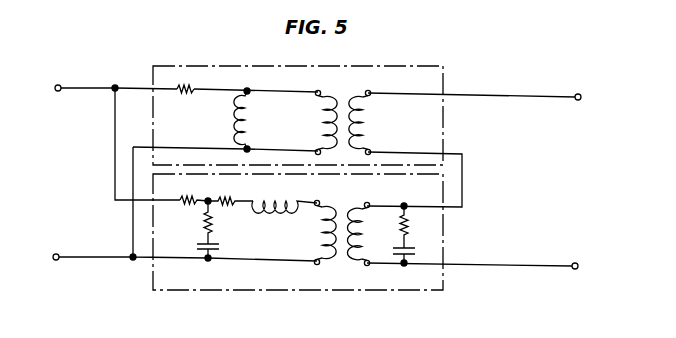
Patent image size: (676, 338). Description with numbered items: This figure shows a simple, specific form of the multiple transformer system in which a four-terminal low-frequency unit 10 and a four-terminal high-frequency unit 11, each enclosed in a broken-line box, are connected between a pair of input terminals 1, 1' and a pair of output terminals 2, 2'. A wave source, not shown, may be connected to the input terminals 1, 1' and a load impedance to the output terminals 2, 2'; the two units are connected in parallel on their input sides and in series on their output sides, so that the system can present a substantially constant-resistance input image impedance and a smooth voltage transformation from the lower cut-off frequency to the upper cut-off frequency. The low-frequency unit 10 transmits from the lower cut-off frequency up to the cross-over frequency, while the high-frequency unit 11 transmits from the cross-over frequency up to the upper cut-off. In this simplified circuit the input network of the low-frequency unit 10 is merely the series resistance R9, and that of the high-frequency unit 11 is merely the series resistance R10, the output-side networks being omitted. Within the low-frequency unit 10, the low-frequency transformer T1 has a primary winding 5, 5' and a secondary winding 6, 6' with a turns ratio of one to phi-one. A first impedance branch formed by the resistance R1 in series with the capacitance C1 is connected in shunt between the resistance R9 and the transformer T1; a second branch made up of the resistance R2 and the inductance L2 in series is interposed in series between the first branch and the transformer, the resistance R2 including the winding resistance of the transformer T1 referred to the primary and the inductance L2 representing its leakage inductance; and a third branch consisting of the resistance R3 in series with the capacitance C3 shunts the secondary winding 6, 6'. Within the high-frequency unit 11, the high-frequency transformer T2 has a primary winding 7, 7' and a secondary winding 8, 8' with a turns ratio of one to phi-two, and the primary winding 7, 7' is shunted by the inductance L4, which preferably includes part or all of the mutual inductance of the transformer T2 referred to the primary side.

The input terminal 1 is at (76, 89).
The input terminal 1' is at (82, 258).
The output terminal 2 is at (483, 100).
The output terminal 2' is at (481, 268).
The primary winding terminal 5 is at (312, 196).
The primary winding terminal 5' is at (308, 271).
The secondary winding terminal 6 is at (372, 197).
The secondary winding terminal 6' is at (367, 272).
The primary winding terminal 7 is at (313, 85).
The primary winding terminal 7' is at (309, 159).
The secondary winding terminal 8 is at (374, 85).
The secondary winding terminal 8' is at (375, 159).
The low-frequency unit 10 is at (228, 283).
The high-frequency unit 11 is at (224, 70).
The series resistance R10 is at (179, 101).
The inductance L4 is at (254, 120).
The high-frequency transformer T2 is at (341, 123).
The series resistance R9 is at (189, 191).
The resistance R1 is at (197, 222).
The capacitance C1 is at (195, 249).
The resistance R2 is at (230, 215).
The inductance L2 is at (284, 220).
The low-frequency transformer T1 is at (339, 237).
The resistance R3 is at (414, 227).
The capacitance C3 is at (412, 254).